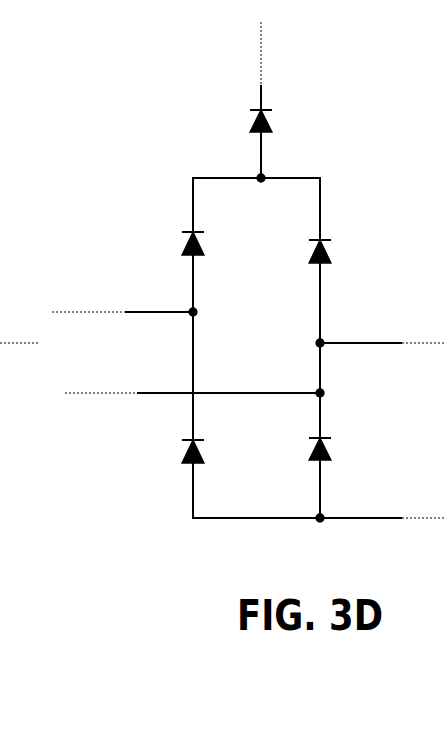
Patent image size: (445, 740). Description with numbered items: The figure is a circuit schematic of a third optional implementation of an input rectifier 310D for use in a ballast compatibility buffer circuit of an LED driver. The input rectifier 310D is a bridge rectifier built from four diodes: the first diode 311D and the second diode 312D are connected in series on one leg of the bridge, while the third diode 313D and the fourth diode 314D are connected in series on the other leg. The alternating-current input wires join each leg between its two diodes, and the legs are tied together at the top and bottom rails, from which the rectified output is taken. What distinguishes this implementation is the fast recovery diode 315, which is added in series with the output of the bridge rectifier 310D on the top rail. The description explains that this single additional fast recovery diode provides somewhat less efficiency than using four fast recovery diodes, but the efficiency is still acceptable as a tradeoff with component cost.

The fast recovery diode D5-Fast 315 is at (280, 100).
The input rectifier 310D is at (242, 305).
The diode D1 311D is at (178, 228).
The diode D2 312D is at (183, 437).
The diode D3 313D is at (357, 220).
The diode D4 314D is at (328, 436).